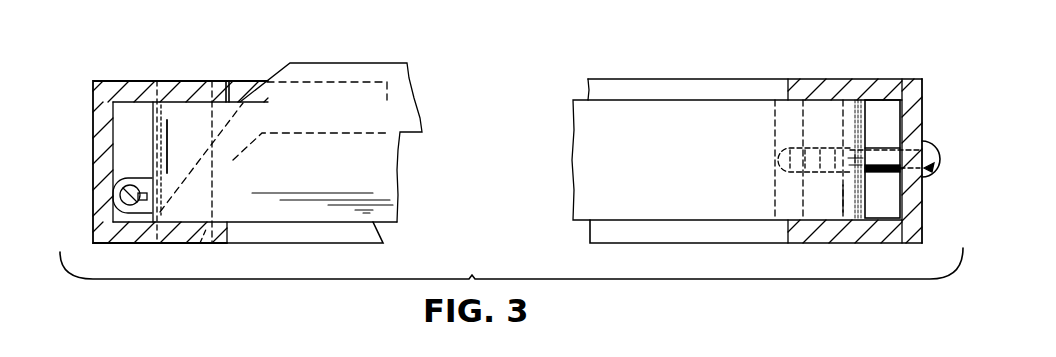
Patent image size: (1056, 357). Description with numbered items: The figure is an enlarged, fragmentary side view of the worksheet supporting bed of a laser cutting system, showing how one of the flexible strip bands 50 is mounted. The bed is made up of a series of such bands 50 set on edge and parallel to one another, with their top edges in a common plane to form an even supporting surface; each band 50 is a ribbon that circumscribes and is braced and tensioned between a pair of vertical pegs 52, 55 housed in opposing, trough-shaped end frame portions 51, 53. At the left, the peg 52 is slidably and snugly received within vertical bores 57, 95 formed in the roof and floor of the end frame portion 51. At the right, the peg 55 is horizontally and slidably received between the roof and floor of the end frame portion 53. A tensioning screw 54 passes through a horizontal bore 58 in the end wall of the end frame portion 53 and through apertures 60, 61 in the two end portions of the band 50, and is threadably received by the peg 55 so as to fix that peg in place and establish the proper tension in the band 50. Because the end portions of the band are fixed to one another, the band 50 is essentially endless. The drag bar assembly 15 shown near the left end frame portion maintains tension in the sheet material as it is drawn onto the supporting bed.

The drag bar assembly 15 is at (427, 110).
The flexible strip band 50 is at (622, 100).
The end frame portion 51 is at (135, 80).
The vertical peg 52 is at (233, 98).
The end frame portion 53 is at (862, 78).
The tensioning screw 54 is at (923, 140).
The vertical peg 55 is at (798, 130).
The vertical bore 57 is at (212, 80).
The horizontal bore 58 is at (913, 162).
The aperture 60 is at (873, 150).
The aperture 61 is at (842, 173).
The vertical bore 95 is at (202, 246).